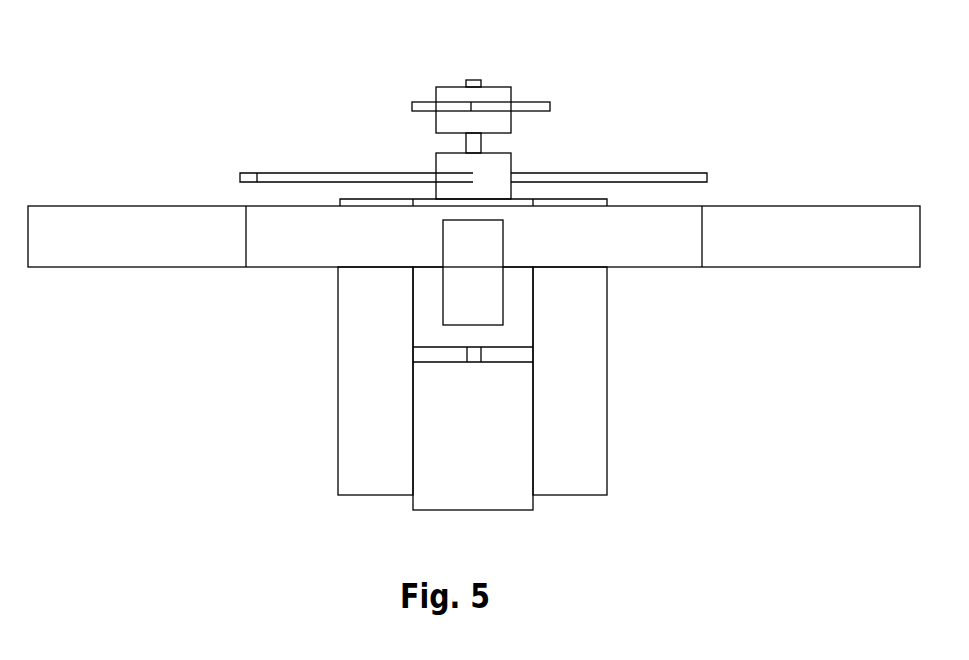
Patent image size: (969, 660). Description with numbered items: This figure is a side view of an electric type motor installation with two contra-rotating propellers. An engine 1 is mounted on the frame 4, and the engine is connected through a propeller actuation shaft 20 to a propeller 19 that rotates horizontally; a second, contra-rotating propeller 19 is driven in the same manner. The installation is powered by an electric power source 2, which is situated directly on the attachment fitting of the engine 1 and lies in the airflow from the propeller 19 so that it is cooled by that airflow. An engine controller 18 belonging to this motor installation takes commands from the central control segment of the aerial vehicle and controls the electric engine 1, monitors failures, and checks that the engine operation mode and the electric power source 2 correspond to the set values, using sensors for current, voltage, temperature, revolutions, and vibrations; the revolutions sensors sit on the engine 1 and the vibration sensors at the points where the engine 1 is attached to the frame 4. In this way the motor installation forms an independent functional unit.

The engine 1 is at (510, 458).
The electric power source 2 is at (471, 381).
The frame 4 is at (474, 176).
The engine controller 18 is at (675, 304).
The propeller 19 is at (632, 177).
The propeller actuation shaft 20 is at (273, 119).